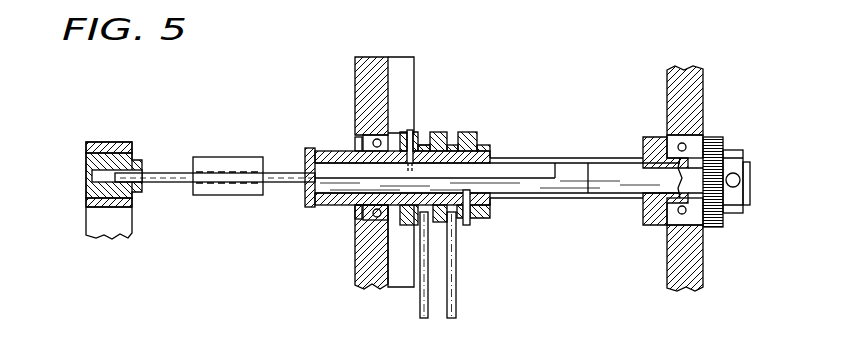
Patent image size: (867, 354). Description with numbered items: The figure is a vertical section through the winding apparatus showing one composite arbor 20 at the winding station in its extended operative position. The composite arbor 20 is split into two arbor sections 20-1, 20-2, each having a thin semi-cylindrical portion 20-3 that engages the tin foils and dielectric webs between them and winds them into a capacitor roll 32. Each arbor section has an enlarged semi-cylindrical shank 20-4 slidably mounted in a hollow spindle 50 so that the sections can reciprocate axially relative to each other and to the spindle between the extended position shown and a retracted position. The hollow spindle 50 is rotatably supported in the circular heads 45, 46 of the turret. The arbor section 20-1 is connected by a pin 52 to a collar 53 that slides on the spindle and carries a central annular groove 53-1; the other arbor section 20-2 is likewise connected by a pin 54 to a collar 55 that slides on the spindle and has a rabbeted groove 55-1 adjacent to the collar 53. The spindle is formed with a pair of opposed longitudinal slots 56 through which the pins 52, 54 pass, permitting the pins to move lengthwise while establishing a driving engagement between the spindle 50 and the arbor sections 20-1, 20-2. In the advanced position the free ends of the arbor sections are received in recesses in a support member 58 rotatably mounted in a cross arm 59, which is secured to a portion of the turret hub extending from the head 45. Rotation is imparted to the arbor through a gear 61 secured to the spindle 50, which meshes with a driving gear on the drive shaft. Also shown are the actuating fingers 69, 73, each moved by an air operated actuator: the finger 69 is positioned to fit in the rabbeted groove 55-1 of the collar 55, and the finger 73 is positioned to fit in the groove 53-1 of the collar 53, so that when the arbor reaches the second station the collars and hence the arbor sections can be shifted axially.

The composite arbor 20 is at (323, 172).
The arbor section 20-1 is at (543, 173).
The arbor section 20-2 is at (527, 188).
The semi-cylindrical portion 20-3 is at (168, 170).
The semi-cylindrical shank 20-4 is at (553, 160).
The capacitor roll 32 is at (231, 165).
The circular head 45 is at (372, 83).
The circular head 46 is at (670, 82).
The hollow spindle 50 is at (632, 208).
The pin 52 is at (410, 130).
The collar 53 is at (445, 133).
The central annular groove 53-1 is at (427, 140).
The pin 54 is at (477, 218).
The collar 55 is at (477, 138).
The rabbeted groove 55-1 is at (454, 135).
The longitudinal slot 56 is at (578, 160).
The support member 58 is at (90, 175).
The cross arm 59 is at (95, 218).
The gear 61 is at (723, 220).
The actuating finger 69 is at (462, 293).
The actuating finger 73 is at (418, 303).